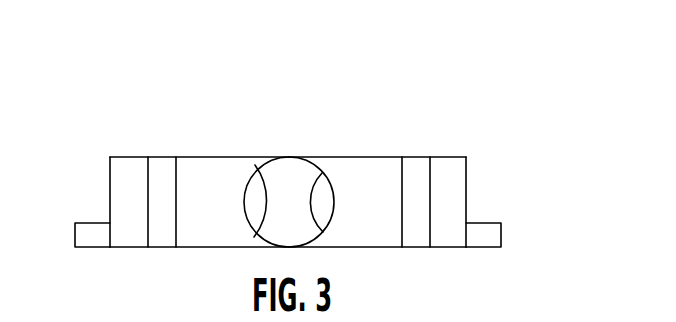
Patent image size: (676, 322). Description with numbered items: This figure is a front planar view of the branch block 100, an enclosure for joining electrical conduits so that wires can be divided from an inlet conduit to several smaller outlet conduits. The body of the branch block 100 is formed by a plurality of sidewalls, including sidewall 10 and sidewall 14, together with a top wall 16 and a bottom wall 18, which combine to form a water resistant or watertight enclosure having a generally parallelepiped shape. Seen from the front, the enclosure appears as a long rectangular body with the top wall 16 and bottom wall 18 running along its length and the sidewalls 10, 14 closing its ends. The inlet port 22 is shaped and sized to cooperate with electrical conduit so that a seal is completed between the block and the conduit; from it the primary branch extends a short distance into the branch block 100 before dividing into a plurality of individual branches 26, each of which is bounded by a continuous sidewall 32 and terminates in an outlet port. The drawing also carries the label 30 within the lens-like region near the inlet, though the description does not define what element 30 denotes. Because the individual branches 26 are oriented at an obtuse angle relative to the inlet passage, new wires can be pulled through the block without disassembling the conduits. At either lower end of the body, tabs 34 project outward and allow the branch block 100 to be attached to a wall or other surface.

The branch block 100 is at (441, 94).
The sidewall 10 is at (203, 232).
The sidewall 14 is at (447, 185).
The top wall 16 is at (358, 157).
The bottom wall 18 is at (373, 247).
The inlet port 22 is at (298, 187).
The individual branches 26 is at (246, 186).
The lens body 30 is at (264, 183).
The continuous sidewall 32 is at (287, 159).
The tabs 34 is at (87, 223).